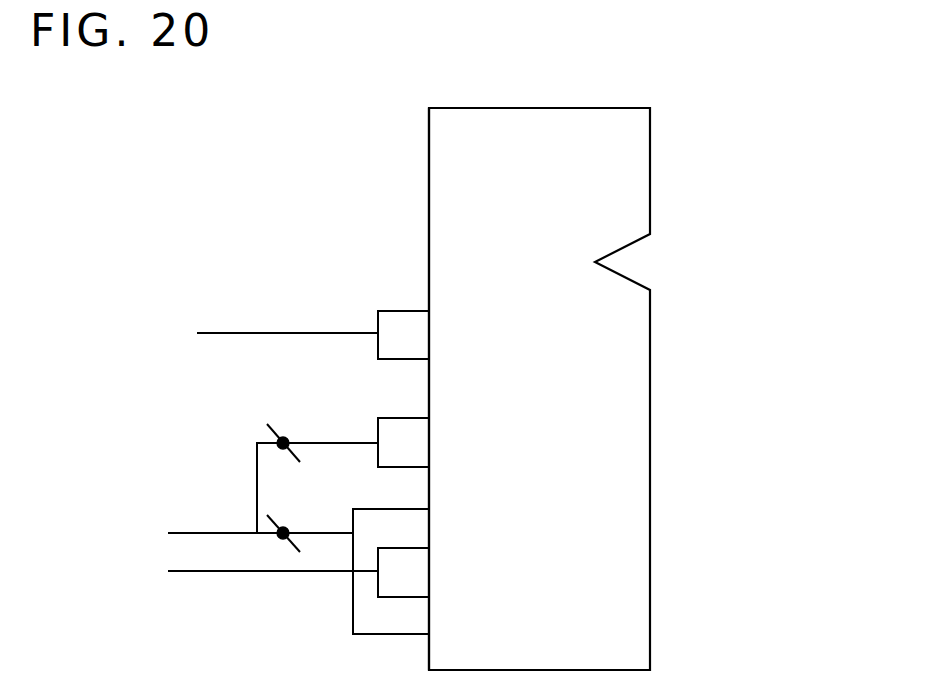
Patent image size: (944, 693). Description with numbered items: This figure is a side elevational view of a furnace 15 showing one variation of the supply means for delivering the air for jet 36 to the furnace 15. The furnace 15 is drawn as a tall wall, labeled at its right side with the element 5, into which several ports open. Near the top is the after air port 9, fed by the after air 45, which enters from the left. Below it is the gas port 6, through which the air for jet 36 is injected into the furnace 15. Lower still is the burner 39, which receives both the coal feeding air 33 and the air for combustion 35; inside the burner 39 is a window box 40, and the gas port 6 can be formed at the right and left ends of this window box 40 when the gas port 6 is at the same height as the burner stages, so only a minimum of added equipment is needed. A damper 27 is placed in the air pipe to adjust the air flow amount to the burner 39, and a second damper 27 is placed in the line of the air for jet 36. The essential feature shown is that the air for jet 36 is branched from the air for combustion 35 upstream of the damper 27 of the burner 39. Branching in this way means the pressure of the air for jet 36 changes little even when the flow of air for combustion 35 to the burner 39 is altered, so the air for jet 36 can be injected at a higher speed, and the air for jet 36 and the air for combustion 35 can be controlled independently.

The body 5 is at (623, 183).
The furnace 15 is at (448, 183).
The after air port 9 is at (387, 348).
The after air 45 is at (235, 335).
The gas port 6 is at (387, 450).
The air for jet 36 is at (257, 483).
The damper 27 is at (283, 449).
The air for combustion 35 is at (182, 535).
The coal feeding air 33 is at (182, 573).
The burner 39 is at (353, 607).
The window box 40 is at (385, 622).